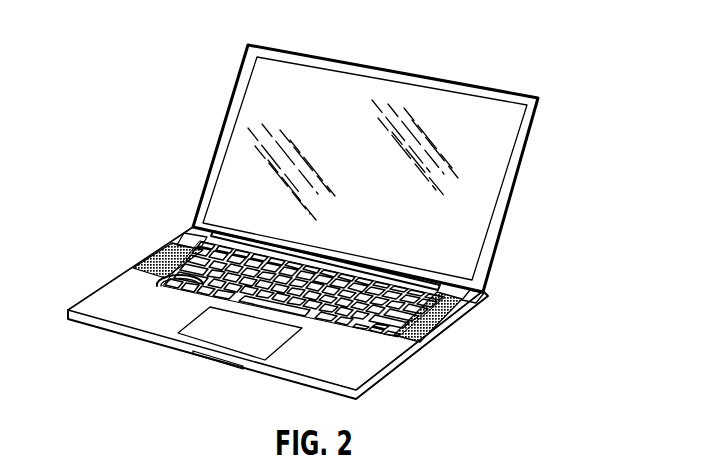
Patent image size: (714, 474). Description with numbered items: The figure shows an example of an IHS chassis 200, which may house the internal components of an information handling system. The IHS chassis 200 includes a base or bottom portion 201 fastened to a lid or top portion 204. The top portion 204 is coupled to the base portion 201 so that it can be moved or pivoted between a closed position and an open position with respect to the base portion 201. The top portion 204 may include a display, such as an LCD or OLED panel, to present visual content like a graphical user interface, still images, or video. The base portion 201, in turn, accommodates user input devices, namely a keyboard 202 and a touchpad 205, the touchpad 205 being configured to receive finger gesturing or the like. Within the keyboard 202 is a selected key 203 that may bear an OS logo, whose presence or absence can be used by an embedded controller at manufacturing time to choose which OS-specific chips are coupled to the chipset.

The IHS chassis 200 is at (484, 60).
The base portion 201 is at (98, 307).
The keyboard 202 is at (141, 247).
The selected key 203 is at (163, 283).
The top portion 204 is at (463, 254).
The touchpad 205 is at (274, 336).